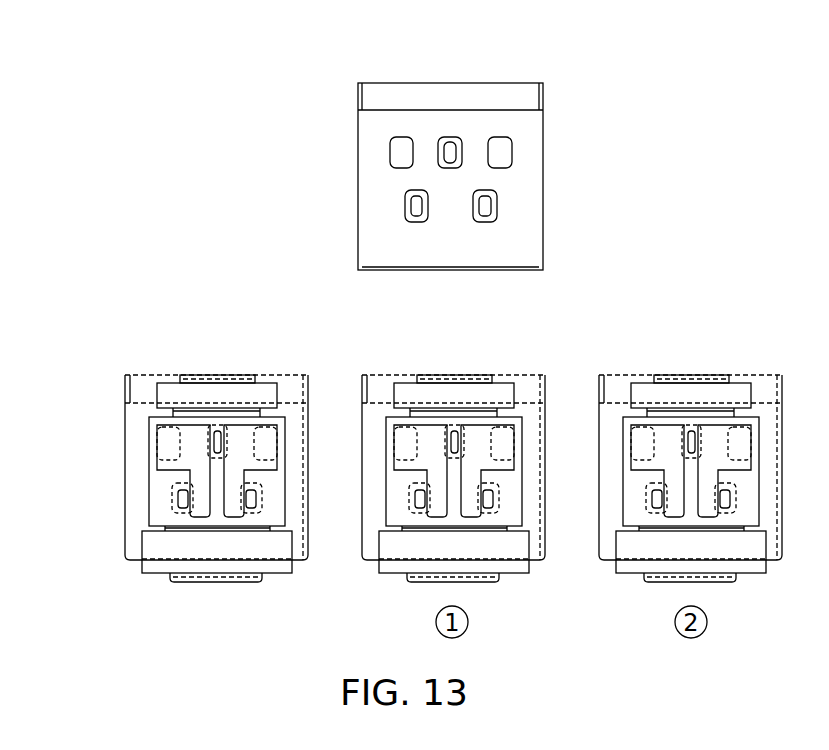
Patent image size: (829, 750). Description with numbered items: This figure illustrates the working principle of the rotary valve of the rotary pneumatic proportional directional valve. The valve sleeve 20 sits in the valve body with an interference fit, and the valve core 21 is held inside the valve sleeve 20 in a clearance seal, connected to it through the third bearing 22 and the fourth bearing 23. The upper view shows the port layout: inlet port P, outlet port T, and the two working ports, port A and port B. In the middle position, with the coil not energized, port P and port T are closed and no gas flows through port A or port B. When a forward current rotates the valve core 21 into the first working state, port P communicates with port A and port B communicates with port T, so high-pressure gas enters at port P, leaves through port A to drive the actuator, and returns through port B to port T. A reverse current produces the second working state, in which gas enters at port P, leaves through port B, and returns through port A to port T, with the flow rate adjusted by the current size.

The valve sleeve 20 is at (137, 387).
The valve core 21 is at (160, 485).
The third bearing 22 is at (218, 391).
The fourth bearing 23 is at (163, 567).
The port A is at (400, 153).
The port B is at (500, 154).
The port P is at (452, 150).
The port T is at (483, 208).